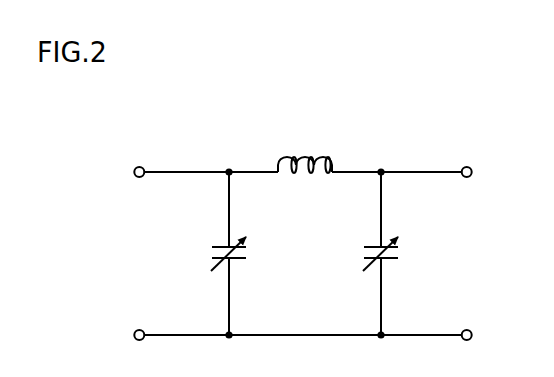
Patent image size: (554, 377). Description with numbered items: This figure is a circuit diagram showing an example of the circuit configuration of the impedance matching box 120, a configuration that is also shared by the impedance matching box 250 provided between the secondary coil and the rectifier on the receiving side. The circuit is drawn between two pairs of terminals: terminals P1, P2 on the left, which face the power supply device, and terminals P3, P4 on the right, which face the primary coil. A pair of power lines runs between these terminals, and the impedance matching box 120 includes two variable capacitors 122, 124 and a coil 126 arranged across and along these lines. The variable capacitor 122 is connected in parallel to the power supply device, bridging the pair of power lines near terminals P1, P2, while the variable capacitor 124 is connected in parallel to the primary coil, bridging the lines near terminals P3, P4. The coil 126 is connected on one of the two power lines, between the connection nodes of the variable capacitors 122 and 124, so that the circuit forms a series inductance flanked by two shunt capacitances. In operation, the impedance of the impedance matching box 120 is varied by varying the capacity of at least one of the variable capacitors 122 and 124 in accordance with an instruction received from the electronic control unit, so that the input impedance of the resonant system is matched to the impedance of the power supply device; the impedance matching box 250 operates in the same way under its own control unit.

The impedance matching box 120 is at (212, 93).
The impedance matching box 250 is at (303, 205).
The variable capacitor 122 is at (223, 247).
The variable capacitor 124 is at (374, 247).
The coil 126 is at (298, 157).
The terminal P1 is at (135, 167).
The terminal P2 is at (135, 330).
The terminal P3 is at (471, 167).
The terminal P4 is at (471, 330).